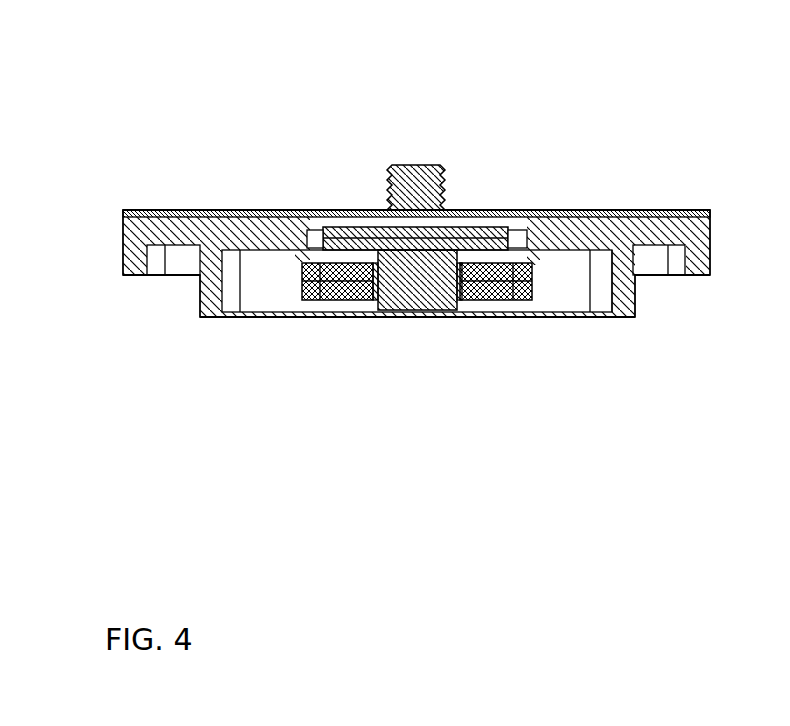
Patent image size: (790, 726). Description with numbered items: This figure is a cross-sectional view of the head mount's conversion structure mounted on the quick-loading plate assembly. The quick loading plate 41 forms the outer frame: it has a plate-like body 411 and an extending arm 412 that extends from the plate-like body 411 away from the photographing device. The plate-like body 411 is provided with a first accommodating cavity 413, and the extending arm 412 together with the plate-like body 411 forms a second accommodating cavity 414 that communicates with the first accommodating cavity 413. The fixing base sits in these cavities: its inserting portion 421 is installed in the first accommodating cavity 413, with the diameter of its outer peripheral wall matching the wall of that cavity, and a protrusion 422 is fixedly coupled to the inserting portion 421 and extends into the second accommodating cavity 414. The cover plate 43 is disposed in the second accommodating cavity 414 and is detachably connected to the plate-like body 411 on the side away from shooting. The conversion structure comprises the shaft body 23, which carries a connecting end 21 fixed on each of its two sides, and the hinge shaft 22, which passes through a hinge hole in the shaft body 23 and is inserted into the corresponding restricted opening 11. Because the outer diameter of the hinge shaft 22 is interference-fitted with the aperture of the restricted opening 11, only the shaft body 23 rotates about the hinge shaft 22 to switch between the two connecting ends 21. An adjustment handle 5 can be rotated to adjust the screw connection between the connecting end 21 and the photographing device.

The quick loading plate 41 is at (372, 285).
The plate-like body 411 is at (153, 212).
The extending arm 412 is at (620, 300).
The first accommodating cavity 413 is at (322, 212).
The second accommodating cavity 414 is at (563, 285).
The inserting portion 421 is at (347, 212).
The protrusion 422 is at (352, 300).
The cover plate 43 is at (272, 212).
The connecting end 21 is at (408, 185).
The hinge shaft 22 is at (505, 212).
The shaft body 23 is at (455, 212).
The adjustment handle 5 is at (305, 300).
The restricted opening 11 is at (487, 300).